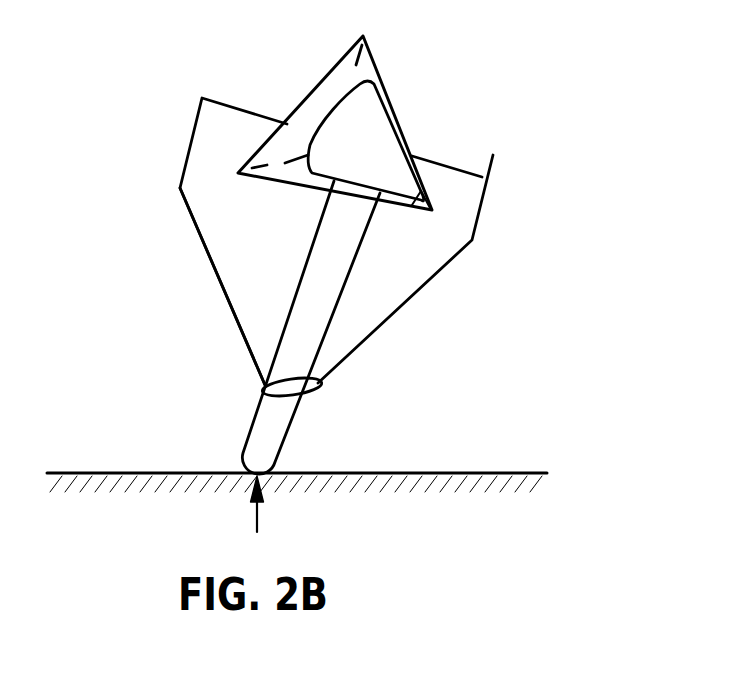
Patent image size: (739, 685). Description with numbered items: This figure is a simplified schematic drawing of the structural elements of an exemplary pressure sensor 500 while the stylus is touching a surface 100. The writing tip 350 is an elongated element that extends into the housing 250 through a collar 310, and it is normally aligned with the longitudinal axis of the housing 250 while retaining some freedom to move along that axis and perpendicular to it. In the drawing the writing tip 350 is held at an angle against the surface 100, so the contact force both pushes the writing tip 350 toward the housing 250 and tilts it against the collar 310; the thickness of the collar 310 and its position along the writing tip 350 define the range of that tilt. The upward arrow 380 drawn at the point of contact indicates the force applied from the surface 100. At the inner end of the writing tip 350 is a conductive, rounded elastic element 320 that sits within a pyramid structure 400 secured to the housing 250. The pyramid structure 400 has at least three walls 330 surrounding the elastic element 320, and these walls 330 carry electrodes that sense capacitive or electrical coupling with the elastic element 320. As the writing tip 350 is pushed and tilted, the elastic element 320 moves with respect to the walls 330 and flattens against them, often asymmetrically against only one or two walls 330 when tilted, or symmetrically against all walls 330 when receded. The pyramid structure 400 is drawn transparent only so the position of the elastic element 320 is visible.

The surface 100 is at (405, 473).
The housing 250 is at (224, 294).
The collar 310 is at (320, 384).
The elastic element 320 is at (330, 138).
The walls 330 is at (310, 92).
The writing tip 350 is at (253, 423).
The force direction arrow 380 is at (258, 522).
The pyramid structure 400 is at (453, 58).
The pressure sensor 500 is at (183, 55).